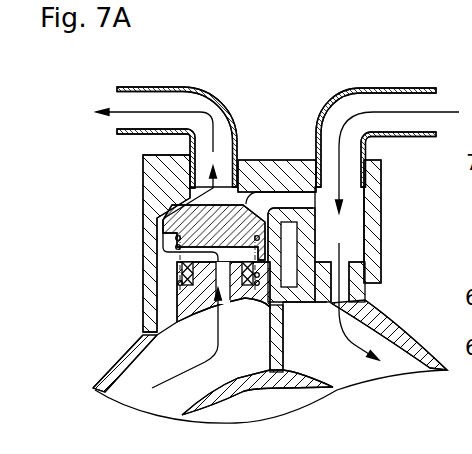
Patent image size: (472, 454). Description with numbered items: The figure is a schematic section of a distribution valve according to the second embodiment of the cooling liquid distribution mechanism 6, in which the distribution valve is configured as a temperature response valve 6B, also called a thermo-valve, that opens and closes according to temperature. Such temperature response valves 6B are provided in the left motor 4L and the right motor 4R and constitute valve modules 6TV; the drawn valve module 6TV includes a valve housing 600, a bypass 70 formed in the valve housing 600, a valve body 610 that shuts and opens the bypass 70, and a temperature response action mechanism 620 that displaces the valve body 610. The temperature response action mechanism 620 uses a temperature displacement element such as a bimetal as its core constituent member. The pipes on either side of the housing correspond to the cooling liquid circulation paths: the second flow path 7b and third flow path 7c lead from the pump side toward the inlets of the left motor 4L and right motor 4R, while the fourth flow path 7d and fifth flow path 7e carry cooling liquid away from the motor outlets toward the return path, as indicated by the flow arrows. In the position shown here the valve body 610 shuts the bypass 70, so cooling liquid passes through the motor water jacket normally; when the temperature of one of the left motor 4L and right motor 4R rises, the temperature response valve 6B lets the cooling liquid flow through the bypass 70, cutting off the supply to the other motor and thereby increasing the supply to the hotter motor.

The temperature response valve 6B is at (375, 137).
The cooling liquid distribution mechanism 6 is at (375, 137).
The bypass 70 is at (265, 200).
The fourth flow path 7d is at (154, 184).
The fifth flow path 7e is at (138, 124).
The second flow path 7b is at (387, 150).
The third flow path 7c is at (418, 121).
The valve body 610 is at (162, 221).
The valve housing 600 is at (148, 269).
The temperature response action mechanism 620 is at (180, 270).
The valve module 6TV is at (168, 311).
The right motor 4R is at (275, 344).
The left motor 4L is at (389, 318).